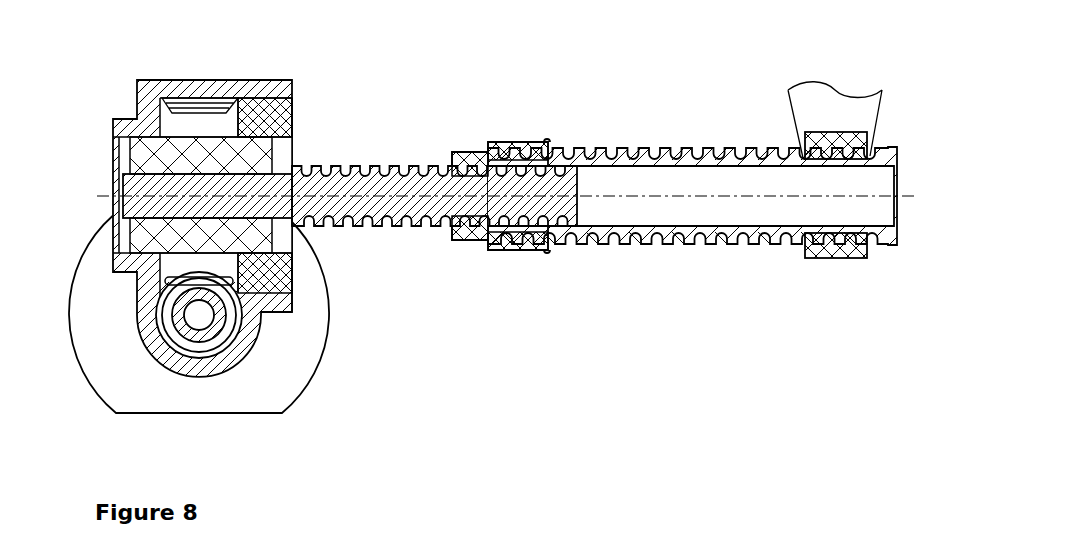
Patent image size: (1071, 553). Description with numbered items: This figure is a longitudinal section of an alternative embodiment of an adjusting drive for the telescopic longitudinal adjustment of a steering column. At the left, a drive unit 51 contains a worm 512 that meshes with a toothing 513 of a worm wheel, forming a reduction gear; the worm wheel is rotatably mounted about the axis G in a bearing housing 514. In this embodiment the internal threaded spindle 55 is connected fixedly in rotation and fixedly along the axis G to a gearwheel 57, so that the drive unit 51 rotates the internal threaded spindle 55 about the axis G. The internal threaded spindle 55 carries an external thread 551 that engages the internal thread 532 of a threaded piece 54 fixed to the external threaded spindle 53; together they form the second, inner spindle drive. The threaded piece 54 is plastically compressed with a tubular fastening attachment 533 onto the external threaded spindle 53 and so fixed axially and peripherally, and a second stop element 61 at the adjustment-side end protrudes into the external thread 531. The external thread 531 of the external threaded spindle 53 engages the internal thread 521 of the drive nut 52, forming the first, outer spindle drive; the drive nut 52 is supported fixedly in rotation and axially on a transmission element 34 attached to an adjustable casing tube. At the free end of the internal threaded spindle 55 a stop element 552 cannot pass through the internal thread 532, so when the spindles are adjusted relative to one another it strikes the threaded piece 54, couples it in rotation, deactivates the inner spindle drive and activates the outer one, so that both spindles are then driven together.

The drive unit 51 is at (293, 365).
The worm 512 is at (183, 347).
The toothing 513 is at (195, 99).
The bearing housing 514 is at (152, 108).
The gearwheel 57 is at (194, 158).
The internal threaded spindle 55 is at (374, 193).
The external thread 551 is at (353, 167).
The stop element 552 is at (606, 178).
The threaded piece 54 is at (494, 153).
The internal thread 532 is at (475, 148).
The fastening attachment 533 is at (514, 153).
The second stop element 61 is at (549, 140).
The external threaded spindle 53 is at (668, 160).
The external thread 531 is at (721, 160).
The drive nut 52 is at (827, 243).
The internal thread 521 is at (853, 243).
The transmission element 34 is at (828, 113).
The axis G is at (907, 196).